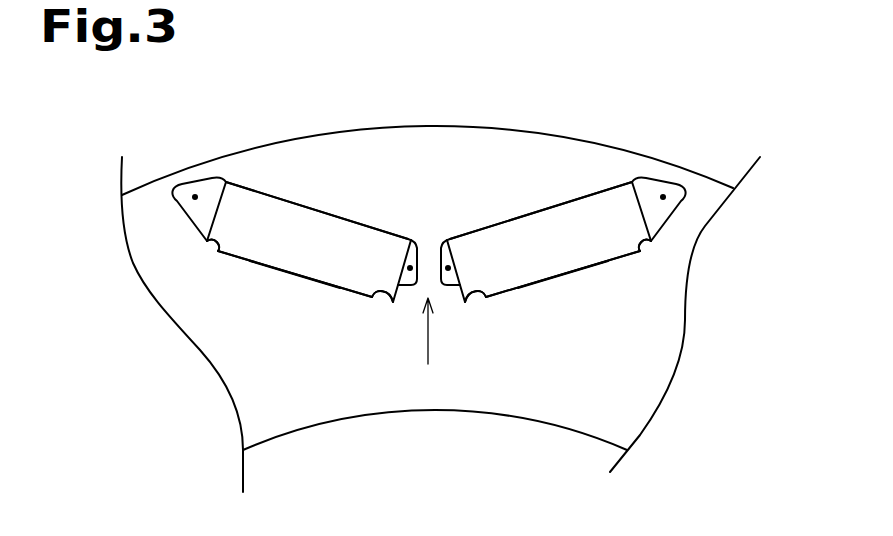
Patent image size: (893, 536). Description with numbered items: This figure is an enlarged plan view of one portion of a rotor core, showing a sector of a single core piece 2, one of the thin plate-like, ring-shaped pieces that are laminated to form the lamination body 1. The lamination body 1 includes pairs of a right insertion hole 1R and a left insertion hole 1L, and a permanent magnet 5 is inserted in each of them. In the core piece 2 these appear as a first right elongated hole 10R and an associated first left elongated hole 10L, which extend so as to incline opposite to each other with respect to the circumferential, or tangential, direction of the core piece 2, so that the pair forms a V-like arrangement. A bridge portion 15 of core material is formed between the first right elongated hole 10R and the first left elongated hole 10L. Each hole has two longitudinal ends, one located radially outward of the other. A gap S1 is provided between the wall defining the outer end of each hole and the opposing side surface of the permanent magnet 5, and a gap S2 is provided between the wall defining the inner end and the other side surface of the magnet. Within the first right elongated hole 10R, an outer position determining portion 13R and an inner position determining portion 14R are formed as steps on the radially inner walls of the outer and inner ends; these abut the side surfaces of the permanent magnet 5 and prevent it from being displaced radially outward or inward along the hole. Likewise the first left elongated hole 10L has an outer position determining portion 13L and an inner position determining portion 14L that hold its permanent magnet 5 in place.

The lamination body 1 is at (440, 309).
The core piece 2 is at (705, 194).
The left insertion hole 1L is at (288, 207).
The right insertion hole 1R is at (526, 219).
The first left elongated hole 10L is at (294, 229).
The first right elongated hole 10R is at (563, 229).
The permanent magnet 5 is at (294, 274).
The outer position determining portion 13L is at (214, 254).
The outer position determining portion 13R is at (644, 250).
The inner position determining portion 14L is at (373, 304).
The inner position determining portion 14R is at (485, 304).
The bridge portion 15 is at (425, 348).
The gap S1 is at (192, 198).
The gap S2 is at (448, 268).